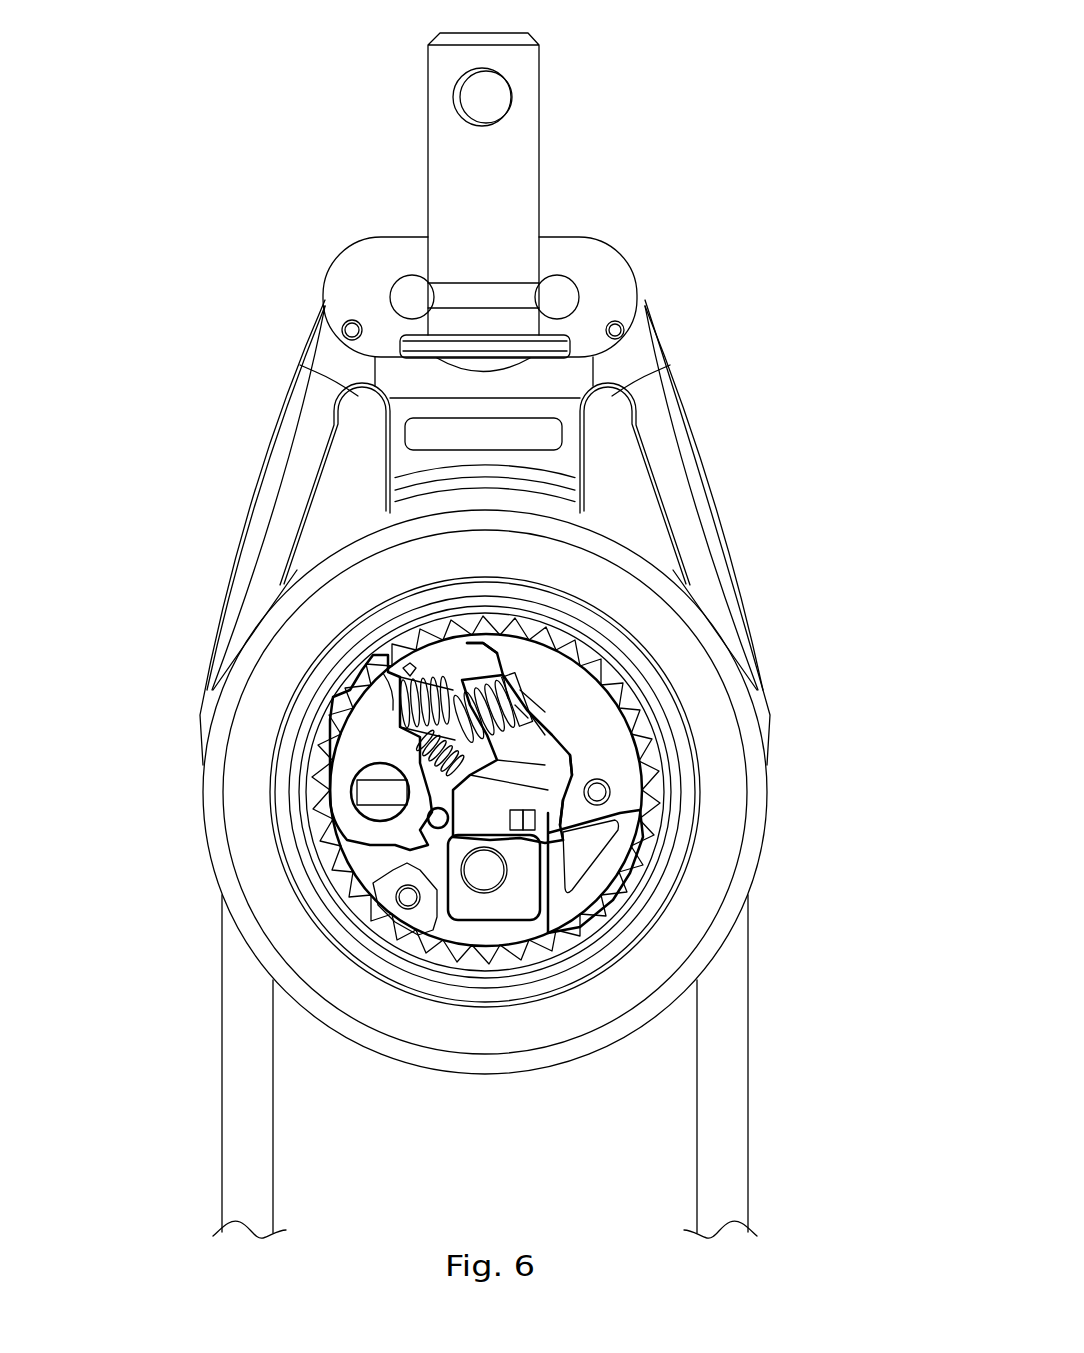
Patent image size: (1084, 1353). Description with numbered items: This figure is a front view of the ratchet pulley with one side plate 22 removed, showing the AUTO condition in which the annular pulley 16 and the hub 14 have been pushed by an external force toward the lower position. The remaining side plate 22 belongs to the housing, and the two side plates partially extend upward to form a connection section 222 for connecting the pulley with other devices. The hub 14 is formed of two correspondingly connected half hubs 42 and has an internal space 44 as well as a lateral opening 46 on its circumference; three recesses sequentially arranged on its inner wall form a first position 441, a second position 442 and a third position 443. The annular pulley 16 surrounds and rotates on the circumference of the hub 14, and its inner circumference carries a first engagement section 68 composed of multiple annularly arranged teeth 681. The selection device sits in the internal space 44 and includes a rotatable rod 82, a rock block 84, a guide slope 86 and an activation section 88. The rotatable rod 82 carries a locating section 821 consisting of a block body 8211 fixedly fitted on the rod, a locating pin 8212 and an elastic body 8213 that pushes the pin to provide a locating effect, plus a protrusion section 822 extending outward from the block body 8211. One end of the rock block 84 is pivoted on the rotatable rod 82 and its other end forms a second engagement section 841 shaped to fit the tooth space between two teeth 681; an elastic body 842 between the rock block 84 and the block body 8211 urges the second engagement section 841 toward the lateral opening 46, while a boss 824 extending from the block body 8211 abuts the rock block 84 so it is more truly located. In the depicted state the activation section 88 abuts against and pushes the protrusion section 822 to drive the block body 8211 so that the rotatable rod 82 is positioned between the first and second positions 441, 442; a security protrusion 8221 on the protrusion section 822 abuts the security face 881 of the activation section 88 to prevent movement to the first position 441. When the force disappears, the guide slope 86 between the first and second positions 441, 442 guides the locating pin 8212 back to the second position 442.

The hub 14 is at (112, 408).
The annular pulley 16 is at (413, 565).
The side plate 22 is at (712, 512).
The connection section 222 is at (605, 293).
The half hub 42 is at (408, 637).
The internal space 44 is at (530, 723).
The first position 441 is at (503, 647).
The second position 442 is at (587, 765).
The third position 443 is at (577, 810).
The lateral opening 46 is at (468, 672).
The first engagement section 68 is at (262, 700).
The teeth 681 is at (400, 692).
The rotatable rod 82 is at (368, 795).
The locating section 821 is at (698, 750).
The block body 8211 is at (535, 725).
The locating pin 8212 is at (508, 698).
The elastic body 8213 is at (520, 720).
The protrusion section 822 is at (606, 775).
The security protrusion 8221 is at (433, 872).
The boss 824 is at (422, 822).
The rock block 84 is at (272, 853).
The second engagement section 841 is at (342, 715).
The elastic body 842 is at (368, 686).
The guide slope 86 is at (543, 698).
The activation section 88 is at (553, 988).
The security face 881 is at (455, 895).